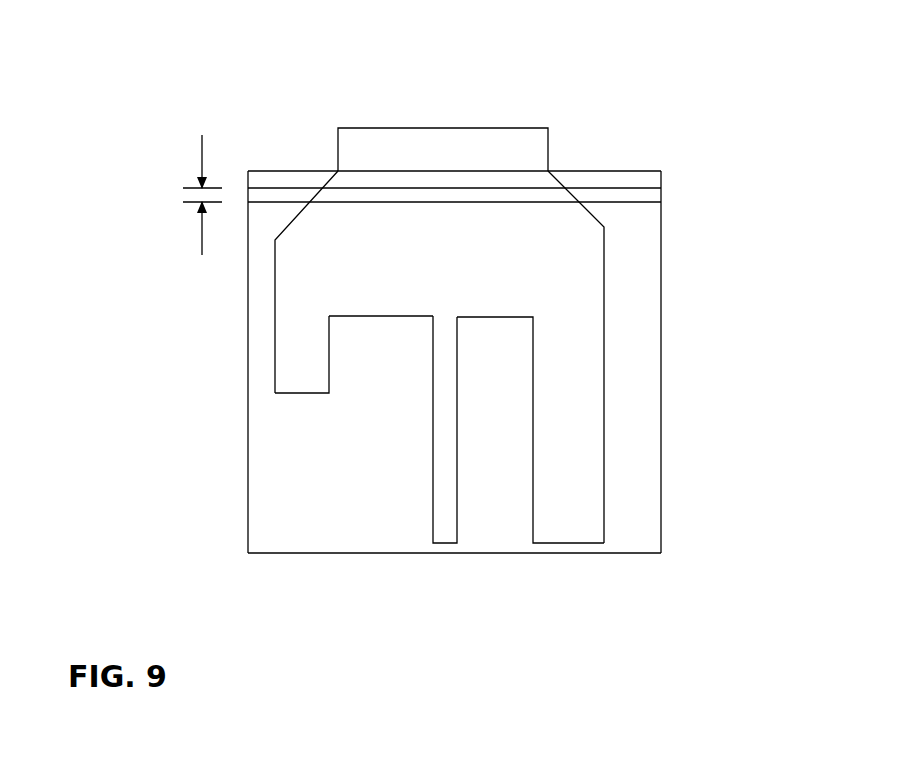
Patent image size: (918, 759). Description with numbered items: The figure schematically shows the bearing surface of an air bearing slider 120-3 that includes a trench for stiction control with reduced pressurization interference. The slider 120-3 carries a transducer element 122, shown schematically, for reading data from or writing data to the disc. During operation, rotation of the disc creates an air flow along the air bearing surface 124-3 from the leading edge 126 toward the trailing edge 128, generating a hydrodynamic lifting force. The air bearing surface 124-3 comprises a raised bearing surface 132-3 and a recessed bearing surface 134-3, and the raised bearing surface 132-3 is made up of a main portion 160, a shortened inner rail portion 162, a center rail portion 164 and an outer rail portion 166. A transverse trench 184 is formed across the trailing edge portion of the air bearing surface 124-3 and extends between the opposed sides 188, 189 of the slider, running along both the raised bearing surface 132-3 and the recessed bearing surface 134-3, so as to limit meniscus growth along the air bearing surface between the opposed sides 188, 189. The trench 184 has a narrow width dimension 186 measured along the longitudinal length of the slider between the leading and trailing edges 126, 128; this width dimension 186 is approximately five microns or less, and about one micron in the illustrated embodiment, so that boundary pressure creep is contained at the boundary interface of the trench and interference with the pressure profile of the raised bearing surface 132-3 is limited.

The slider 120-3 is at (465, 326).
The transducer element 122 is at (478, 140).
The air bearing surface 124-3 is at (485, 391).
The leading edge 126 is at (347, 554).
The trailing edge 128 is at (278, 171).
The raised bearing surface 132-3 is at (579, 339).
The recessed bearing surface 134-3 is at (709, 363).
The main portion 160 is at (460, 272).
The shortened inner rail portion 162 is at (305, 357).
The center rail portion 164 is at (445, 530).
The outer rail portion 166 is at (575, 530).
The transverse trench 184 is at (390, 197).
The width dimension 186 is at (202, 233).
The side of slider 188 is at (248, 465).
The side of slider 189 is at (661, 507).